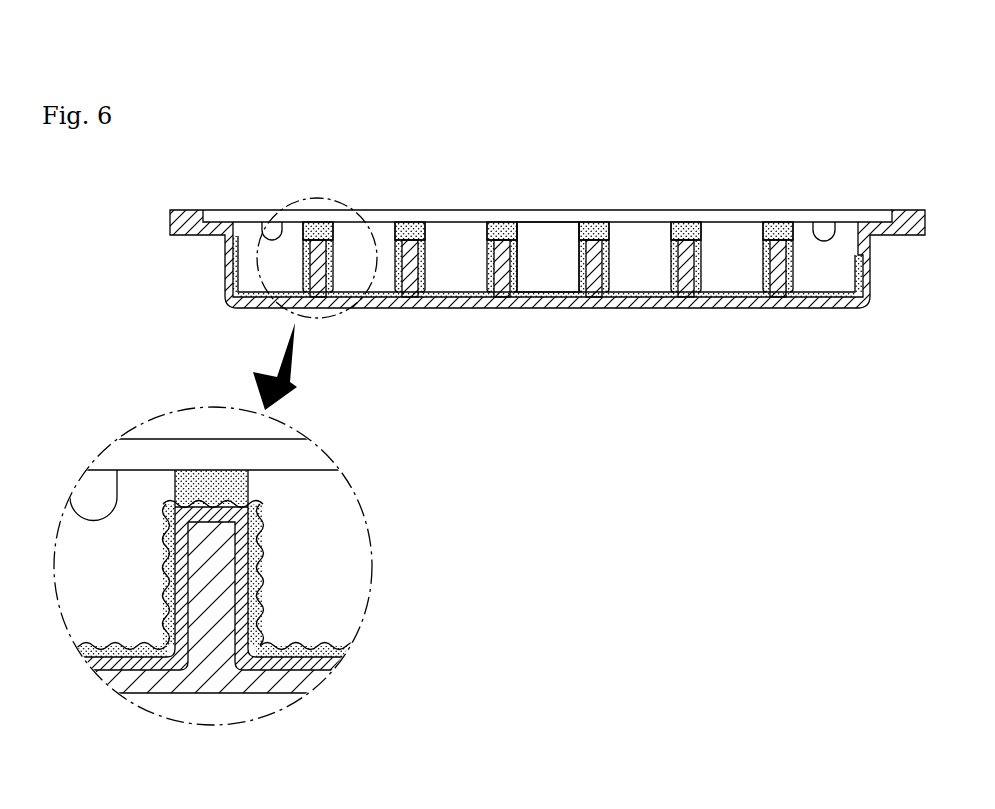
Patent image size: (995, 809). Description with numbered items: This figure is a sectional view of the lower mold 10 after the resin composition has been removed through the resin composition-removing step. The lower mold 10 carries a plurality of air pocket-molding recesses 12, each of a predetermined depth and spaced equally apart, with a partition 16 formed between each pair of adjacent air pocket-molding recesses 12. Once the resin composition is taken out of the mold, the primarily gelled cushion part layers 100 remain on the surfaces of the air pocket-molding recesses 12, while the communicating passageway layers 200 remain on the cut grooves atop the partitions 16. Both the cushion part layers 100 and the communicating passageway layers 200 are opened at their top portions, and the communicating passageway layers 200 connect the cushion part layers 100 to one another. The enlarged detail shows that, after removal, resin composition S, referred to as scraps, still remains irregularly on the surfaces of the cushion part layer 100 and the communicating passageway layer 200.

The lower mold 10 is at (721, 309).
The air pocket-molding recess 12 is at (540, 271).
The partition 16 is at (410, 247).
The cushion part layer 100 is at (455, 288).
The communicating passageway layer 200 is at (498, 225).
The resin composition (scraps) S is at (250, 475).